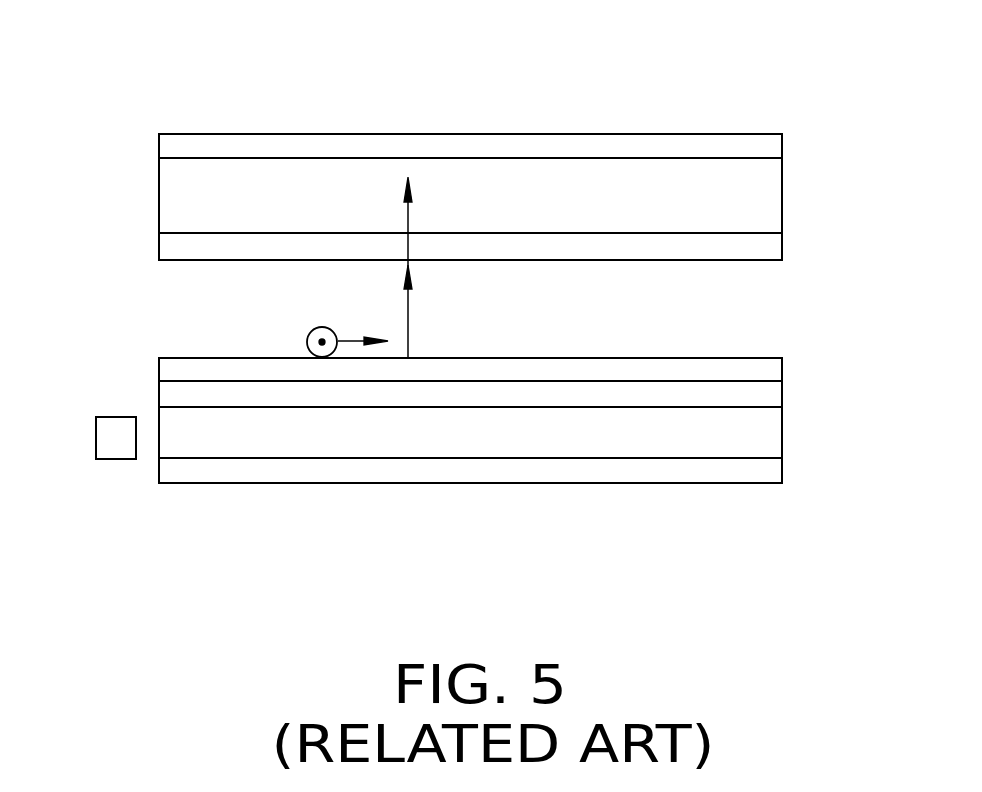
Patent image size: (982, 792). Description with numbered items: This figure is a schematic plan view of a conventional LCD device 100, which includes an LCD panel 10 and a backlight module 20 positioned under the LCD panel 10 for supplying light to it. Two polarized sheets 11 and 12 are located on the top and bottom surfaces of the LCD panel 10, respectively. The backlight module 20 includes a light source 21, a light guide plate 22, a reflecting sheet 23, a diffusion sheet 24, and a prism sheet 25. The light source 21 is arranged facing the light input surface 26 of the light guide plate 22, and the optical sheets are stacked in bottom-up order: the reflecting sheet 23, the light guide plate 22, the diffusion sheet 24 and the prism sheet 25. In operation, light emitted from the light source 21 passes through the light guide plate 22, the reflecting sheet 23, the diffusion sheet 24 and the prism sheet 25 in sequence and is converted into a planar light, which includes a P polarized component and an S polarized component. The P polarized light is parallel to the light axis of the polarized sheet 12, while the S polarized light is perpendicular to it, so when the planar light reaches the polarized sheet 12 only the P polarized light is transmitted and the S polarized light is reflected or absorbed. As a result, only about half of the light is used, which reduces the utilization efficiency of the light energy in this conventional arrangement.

The LCD device 100 is at (570, 81).
The LCD panel 10 is at (509, 194).
The polarized sheet 11 is at (758, 147).
The polarized sheet 12 is at (775, 246).
The backlight module 20 is at (453, 447).
The light source 21 is at (112, 445).
The light guide plate 22 is at (765, 435).
The reflecting sheet 23 is at (770, 472).
The diffusion sheet 24 is at (770, 398).
The prism sheet 25 is at (765, 369).
The light input surface 26 is at (158, 450).